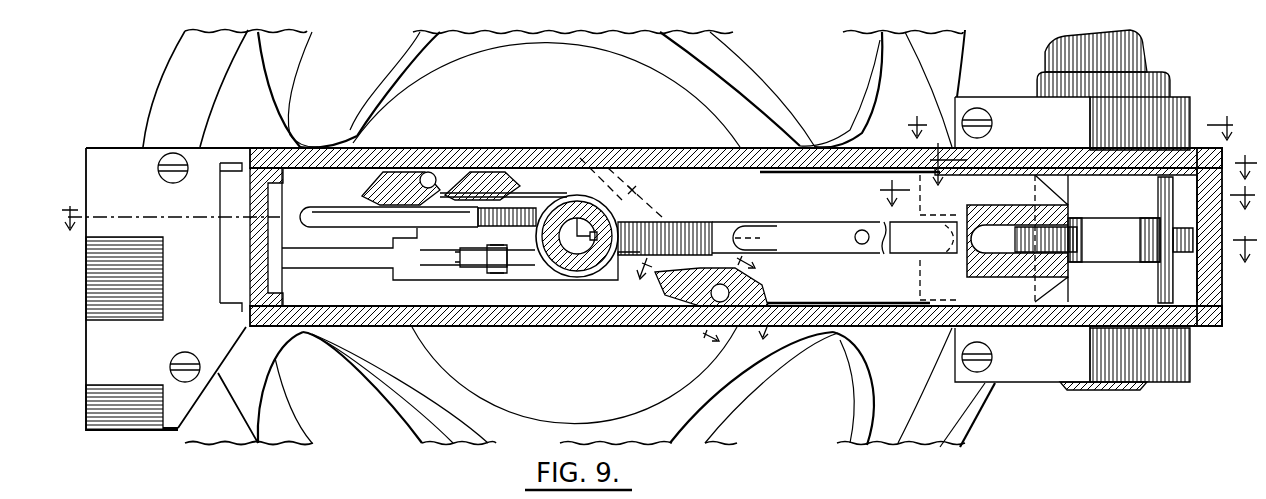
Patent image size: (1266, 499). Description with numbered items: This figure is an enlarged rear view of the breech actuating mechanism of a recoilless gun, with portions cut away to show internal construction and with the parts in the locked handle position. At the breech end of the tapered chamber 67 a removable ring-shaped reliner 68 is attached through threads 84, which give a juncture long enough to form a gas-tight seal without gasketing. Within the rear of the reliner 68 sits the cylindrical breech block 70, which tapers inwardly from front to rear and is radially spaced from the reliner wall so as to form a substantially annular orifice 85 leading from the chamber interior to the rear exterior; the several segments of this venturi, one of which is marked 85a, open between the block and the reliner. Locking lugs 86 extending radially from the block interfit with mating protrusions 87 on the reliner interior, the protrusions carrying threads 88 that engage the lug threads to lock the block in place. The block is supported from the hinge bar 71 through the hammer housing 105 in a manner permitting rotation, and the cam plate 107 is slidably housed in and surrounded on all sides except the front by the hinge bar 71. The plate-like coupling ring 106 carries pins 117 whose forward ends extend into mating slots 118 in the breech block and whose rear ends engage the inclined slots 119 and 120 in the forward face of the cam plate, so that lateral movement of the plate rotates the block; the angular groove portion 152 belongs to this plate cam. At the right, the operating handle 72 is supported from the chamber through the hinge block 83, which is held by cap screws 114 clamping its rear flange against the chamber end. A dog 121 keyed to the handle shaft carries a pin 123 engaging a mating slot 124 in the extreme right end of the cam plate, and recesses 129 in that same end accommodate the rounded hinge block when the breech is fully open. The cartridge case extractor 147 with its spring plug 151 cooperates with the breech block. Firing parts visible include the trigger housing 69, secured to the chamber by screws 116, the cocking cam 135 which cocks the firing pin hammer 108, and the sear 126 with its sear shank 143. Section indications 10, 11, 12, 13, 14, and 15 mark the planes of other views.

The chamber 67 is at (182, 55).
The threads 84 is at (237, 54).
The annular orifice 85 is at (649, 238).
The blade segment 85a is at (573, 236).
The coupling ring 106 is at (488, 87).
The hinge bar 71 is at (736, 225).
The cam plate 107 is at (717, 147).
The threads 88 is at (283, 133).
The locking lugs 86 is at (355, 140).
The mating protrusions 87 is at (307, 332).
The pins 117 is at (428, 173).
The inclined slot 120 is at (377, 185).
The hammer housing 105 is at (577, 200).
The inclined slot 119 is at (637, 190).
The angular groove portion 152 is at (680, 210).
The cartridge case extractor 147 is at (787, 230).
The spring plug 151 is at (853, 238).
The recesses 129 is at (945, 238).
The section line 12 is at (1055, 237).
The pin 123 is at (1048, 205).
The dog 121 is at (1130, 240).
The mating slot 124 is at (1060, 273).
The section line 10 is at (1070, 128).
The section line 11 is at (1090, 155).
The section line 15 is at (656, 245).
The cap screws 114 is at (973, 113).
The operating handle 72 is at (1123, 50).
The hinge block 83 is at (1210, 83).
The screws 116 is at (173, 160).
The cocking cam 135 is at (465, 222).
The sear 126 is at (453, 260).
The sear shank 143 is at (500, 270).
The firing pin hammer 108 is at (573, 250).
The section line 13 is at (694, 305).
The section line 14 is at (729, 308).
The mating slots 118 is at (670, 328).
The breech block 70 is at (540, 428).
The trigger housing 69 is at (115, 422).
The reliner 68 is at (258, 443).